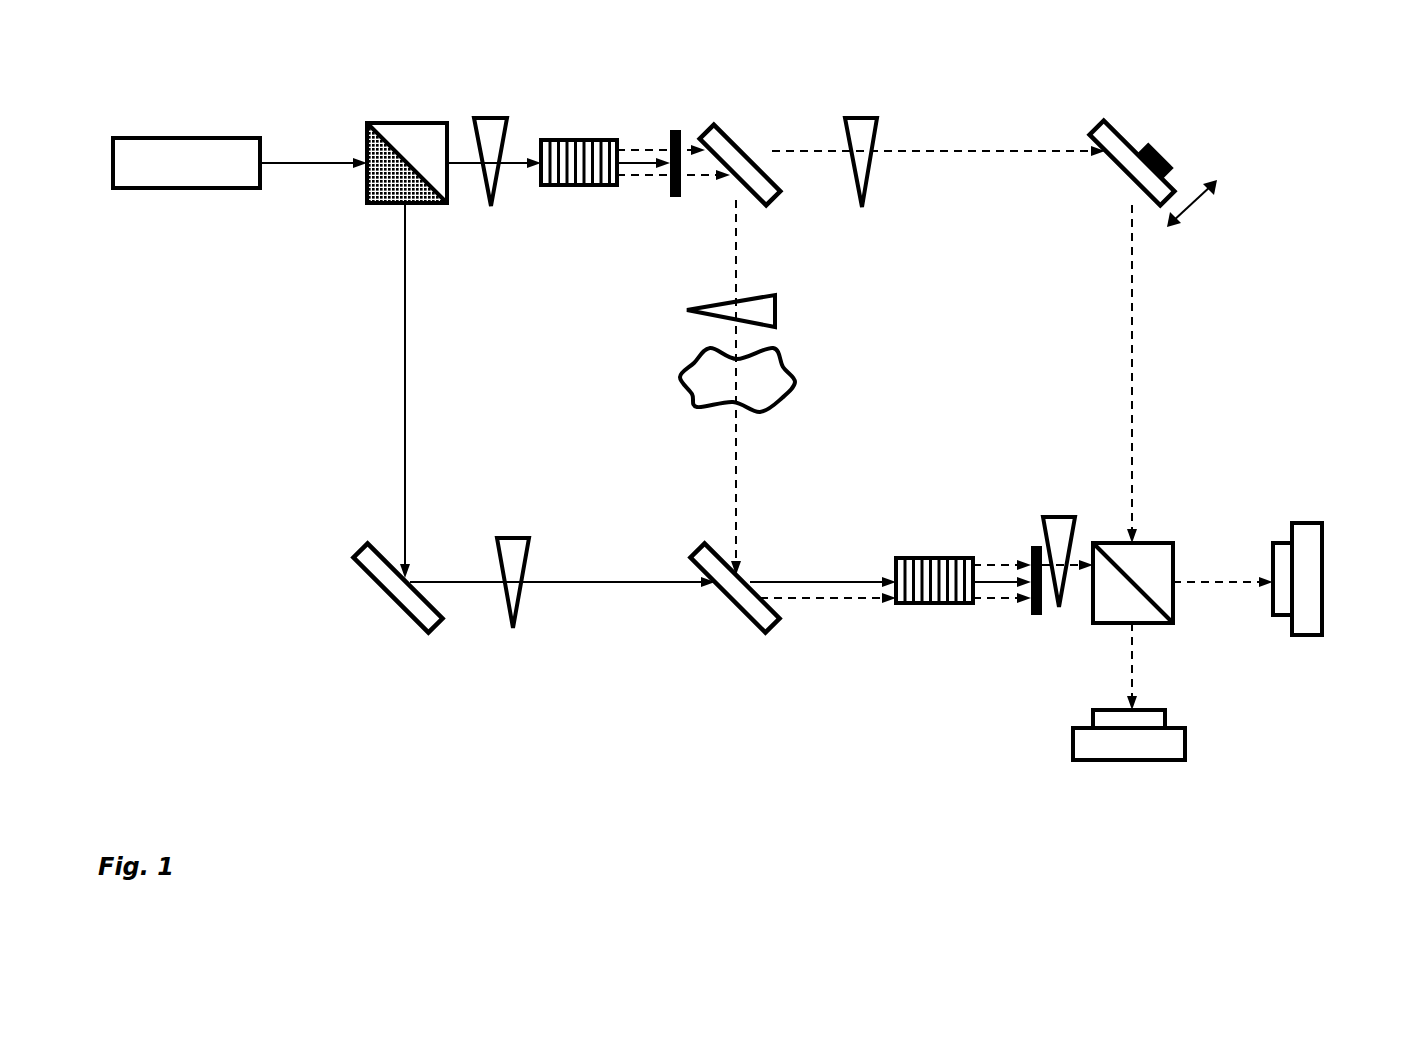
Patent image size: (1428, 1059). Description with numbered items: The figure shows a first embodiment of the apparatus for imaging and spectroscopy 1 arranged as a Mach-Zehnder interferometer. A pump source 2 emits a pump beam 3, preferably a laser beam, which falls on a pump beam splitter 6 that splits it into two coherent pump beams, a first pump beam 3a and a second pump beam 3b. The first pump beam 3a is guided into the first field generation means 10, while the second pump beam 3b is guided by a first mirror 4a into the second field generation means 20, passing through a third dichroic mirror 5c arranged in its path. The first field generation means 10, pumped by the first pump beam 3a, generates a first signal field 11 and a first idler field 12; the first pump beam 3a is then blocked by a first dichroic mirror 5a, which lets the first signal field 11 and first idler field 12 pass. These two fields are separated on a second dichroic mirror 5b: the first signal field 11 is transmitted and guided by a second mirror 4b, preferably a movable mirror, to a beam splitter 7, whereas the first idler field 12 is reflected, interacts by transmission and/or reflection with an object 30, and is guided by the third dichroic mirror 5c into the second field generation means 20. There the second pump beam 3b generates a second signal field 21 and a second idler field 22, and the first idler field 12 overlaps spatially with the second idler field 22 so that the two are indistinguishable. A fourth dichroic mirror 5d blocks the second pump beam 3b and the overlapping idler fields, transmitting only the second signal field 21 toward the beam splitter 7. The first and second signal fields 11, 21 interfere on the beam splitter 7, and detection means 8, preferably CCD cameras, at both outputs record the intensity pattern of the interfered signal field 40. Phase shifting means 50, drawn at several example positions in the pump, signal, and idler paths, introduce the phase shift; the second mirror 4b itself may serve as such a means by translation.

The apparatus for imaging and spectroscopy 1 is at (295, 392).
The pump source 2 is at (160, 135).
The pump beam 3 is at (300, 170).
The first pump beam 3a is at (455, 175).
The second pump beam 3b is at (407, 436).
The first mirror 4a is at (403, 610).
The second mirror 4b is at (1106, 135).
The first dichroic mirror 5a is at (677, 200).
The second dichroic mirror 5b is at (722, 140).
The third dichroic mirror 5c is at (745, 603).
The fourth dichroic mirror 5d is at (1036, 545).
The pump beam splitter 6 is at (410, 115).
The beam splitter 7 is at (1152, 543).
The detector 8 is at (1310, 576).
The first field generation means 10 is at (566, 190).
The first signal field 11 is at (622, 148).
The first idler field 12 is at (638, 170).
The second field generation means 20 is at (910, 557).
The second signal field 21 is at (1005, 563).
The second idler field 22 is at (1000, 602).
The object 30 is at (760, 380).
The interfered signal field 40 is at (1232, 575).
The phase shifting means 50 is at (487, 115).